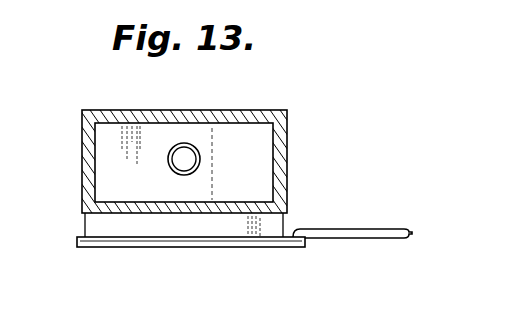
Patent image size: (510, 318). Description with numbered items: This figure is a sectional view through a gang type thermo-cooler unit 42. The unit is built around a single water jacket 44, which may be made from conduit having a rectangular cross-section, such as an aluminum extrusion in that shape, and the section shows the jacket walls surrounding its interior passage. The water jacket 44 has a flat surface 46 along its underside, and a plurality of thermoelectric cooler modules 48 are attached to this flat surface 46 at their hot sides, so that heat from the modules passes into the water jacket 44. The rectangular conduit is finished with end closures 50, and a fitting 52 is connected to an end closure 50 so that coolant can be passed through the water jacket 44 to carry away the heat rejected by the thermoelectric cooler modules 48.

The thermo-cooler unit 42 is at (74, 105).
The water jacket 44 is at (287, 160).
The flat surface 46 is at (86, 223).
The thermoelectric cooler modules 48 is at (172, 232).
The end closures 50 is at (183, 163).
The fittings 52 is at (187, 151).